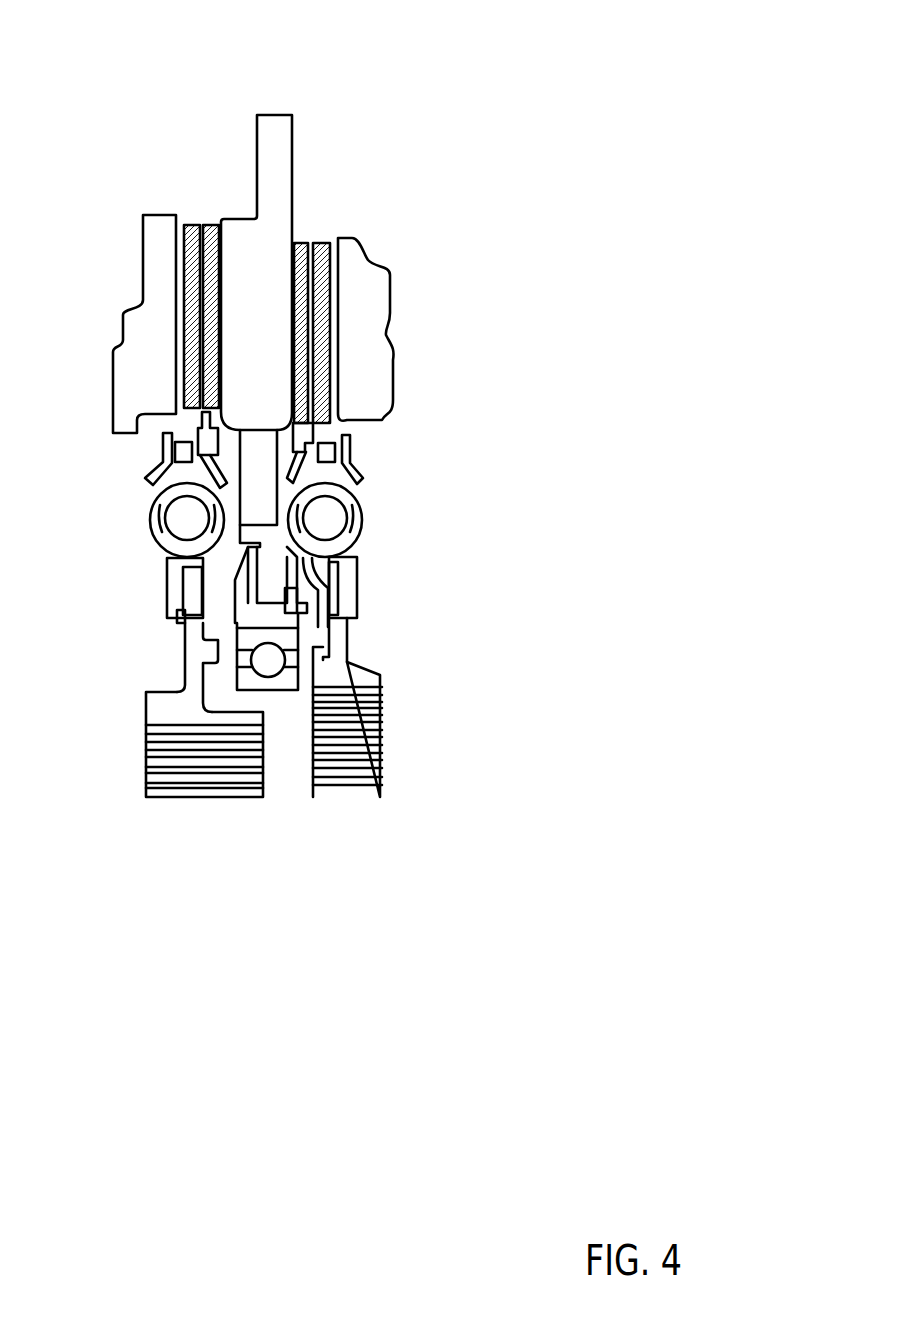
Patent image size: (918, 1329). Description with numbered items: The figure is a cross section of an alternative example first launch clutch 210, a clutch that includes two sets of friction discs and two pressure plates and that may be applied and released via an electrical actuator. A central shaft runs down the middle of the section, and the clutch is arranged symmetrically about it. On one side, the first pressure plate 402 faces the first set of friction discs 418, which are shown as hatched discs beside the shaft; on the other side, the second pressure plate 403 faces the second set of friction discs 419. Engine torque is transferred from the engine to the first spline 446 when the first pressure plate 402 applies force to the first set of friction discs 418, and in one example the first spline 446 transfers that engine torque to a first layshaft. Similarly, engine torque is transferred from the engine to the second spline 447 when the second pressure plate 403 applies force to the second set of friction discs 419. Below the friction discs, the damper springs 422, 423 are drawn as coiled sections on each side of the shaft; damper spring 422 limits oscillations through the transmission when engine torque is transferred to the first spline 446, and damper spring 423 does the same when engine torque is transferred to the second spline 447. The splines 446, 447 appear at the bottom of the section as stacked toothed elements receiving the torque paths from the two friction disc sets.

The first launch clutch 210 is at (477, 56).
The first pressure plate 402 is at (165, 377).
The second pressure plate 403 is at (385, 373).
The first set of friction discs 418 is at (200, 222).
The second set of friction discs 419 is at (312, 243).
The damper spring 422 is at (150, 521).
The damper spring 423 is at (352, 546).
The first spline 446 is at (146, 712).
The second spline 447 is at (383, 677).